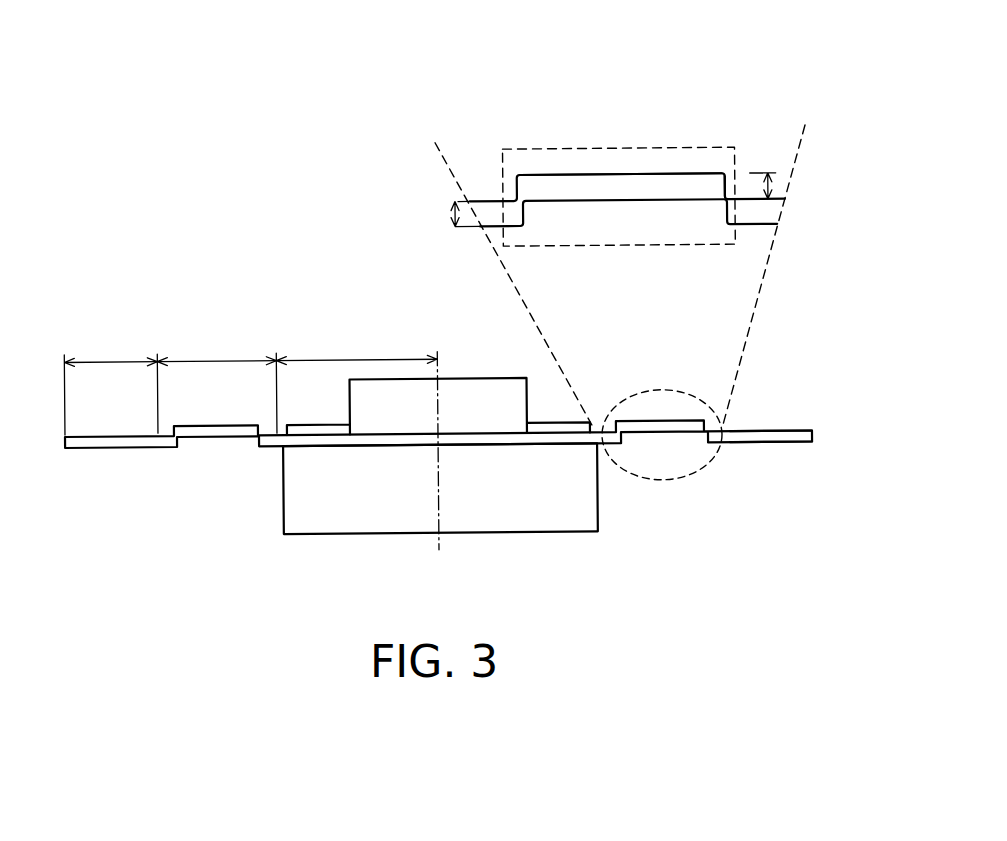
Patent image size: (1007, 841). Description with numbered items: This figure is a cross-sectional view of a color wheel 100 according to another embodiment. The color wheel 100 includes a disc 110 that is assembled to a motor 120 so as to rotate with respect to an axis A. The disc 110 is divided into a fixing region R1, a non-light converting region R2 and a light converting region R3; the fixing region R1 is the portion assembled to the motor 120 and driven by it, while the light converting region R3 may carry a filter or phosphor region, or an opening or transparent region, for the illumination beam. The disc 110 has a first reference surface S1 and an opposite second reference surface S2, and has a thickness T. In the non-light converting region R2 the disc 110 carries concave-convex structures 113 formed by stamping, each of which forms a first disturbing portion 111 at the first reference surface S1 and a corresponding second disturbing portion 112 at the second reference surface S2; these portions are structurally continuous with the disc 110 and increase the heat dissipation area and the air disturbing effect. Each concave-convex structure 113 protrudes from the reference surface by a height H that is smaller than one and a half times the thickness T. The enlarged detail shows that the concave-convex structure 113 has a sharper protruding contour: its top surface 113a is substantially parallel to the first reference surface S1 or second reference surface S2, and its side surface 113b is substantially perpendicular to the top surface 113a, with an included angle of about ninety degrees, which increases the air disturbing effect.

The color wheel 100 is at (797, 327).
The disc 110 is at (817, 426).
The first disturbing portion 111 is at (624, 178).
The second disturbing portion 112 is at (622, 207).
The concave-convex structure 113 is at (545, 148).
The top surface 113a is at (720, 178).
The side surface 113b is at (731, 190).
The motor 120 is at (548, 521).
The first reference surface S1 is at (778, 436).
The second reference surface S2 is at (777, 449).
The thickness T is at (455, 212).
The height H is at (774, 192).
The axis A is at (438, 345).
The fixing region R1 is at (352, 382).
The non-light converting region R2 is at (212, 382).
The light converting region R3 is at (111, 383).